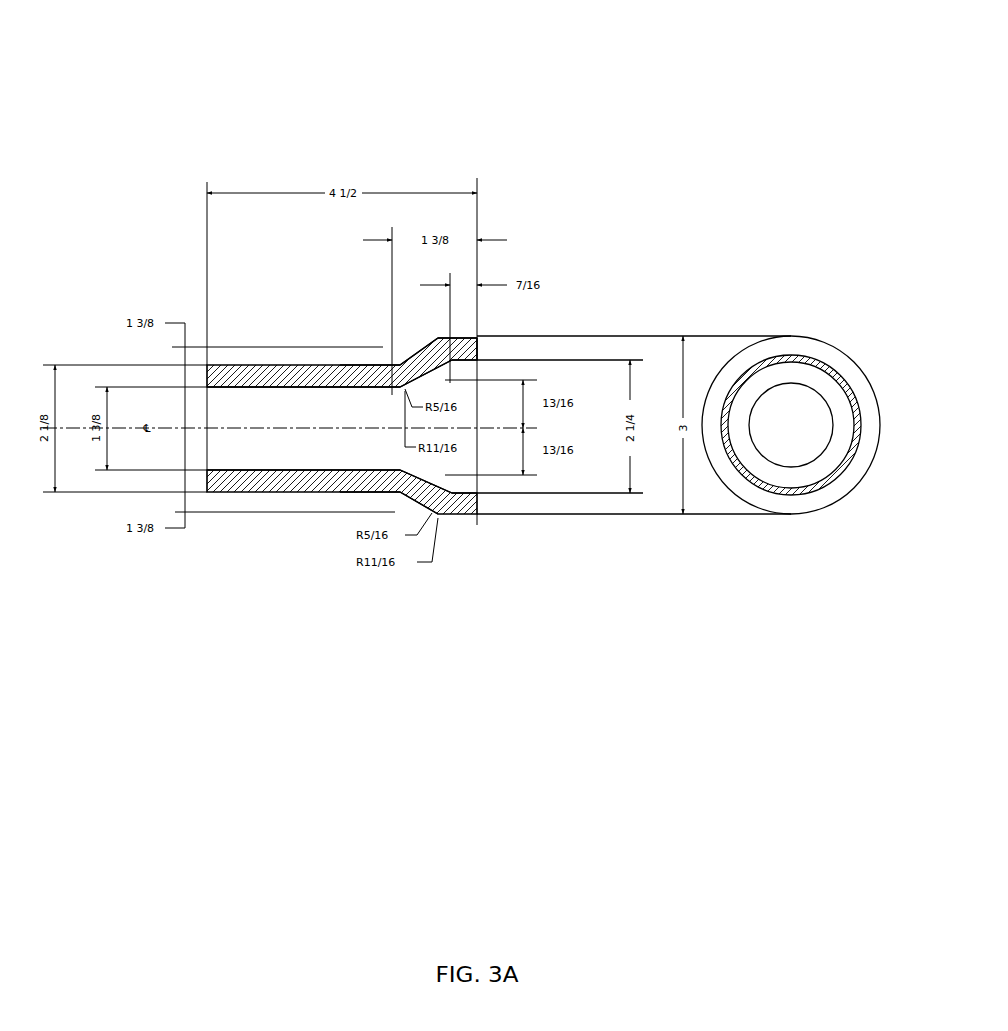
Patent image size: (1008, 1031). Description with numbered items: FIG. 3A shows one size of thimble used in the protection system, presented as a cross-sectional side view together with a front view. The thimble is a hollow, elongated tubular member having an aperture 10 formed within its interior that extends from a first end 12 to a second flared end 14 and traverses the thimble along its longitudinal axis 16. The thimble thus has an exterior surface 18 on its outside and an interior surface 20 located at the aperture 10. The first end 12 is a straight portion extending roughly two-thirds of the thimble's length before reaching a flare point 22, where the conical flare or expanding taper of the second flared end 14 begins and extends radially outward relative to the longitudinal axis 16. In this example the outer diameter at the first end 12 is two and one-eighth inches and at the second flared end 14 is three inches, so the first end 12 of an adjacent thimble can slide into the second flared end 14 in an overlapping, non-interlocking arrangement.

The aperture 10 is at (792, 432).
The first end 12 is at (223, 362).
The second flared end 14 is at (465, 332).
The longitudinal axis 16 is at (169, 428).
The exterior surface 18 is at (357, 362).
The interior surface 20 is at (330, 463).
The flare point 22 is at (401, 352).